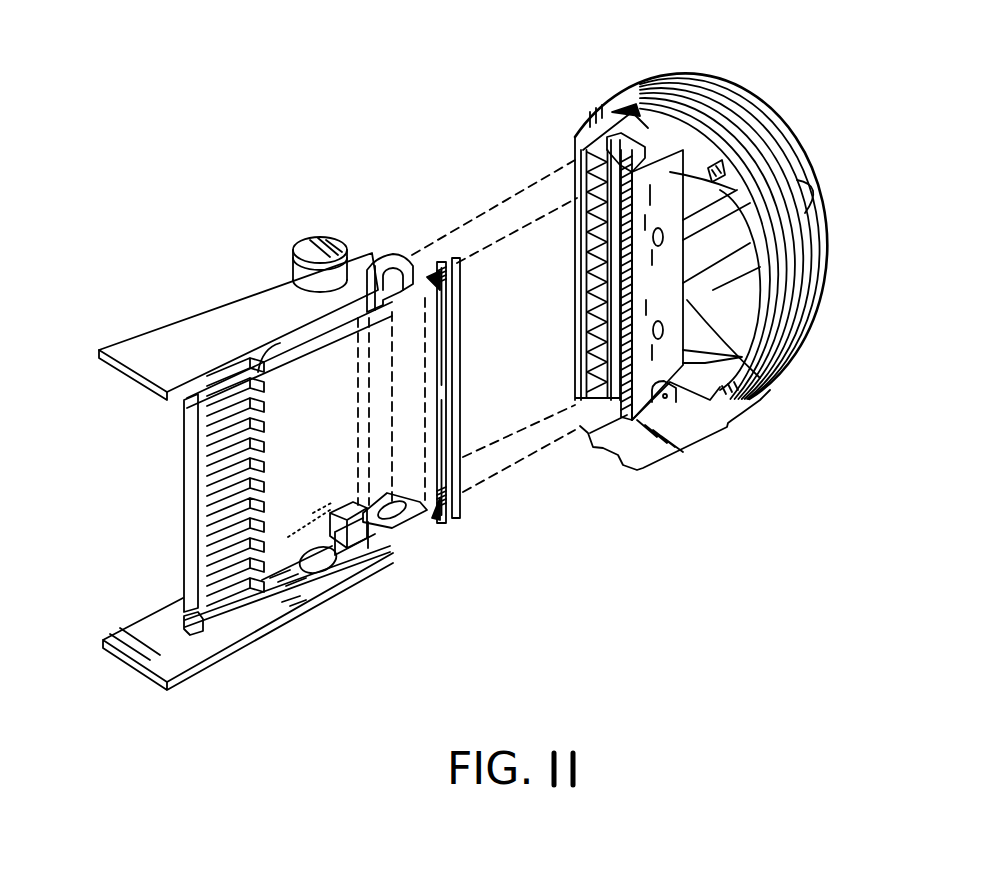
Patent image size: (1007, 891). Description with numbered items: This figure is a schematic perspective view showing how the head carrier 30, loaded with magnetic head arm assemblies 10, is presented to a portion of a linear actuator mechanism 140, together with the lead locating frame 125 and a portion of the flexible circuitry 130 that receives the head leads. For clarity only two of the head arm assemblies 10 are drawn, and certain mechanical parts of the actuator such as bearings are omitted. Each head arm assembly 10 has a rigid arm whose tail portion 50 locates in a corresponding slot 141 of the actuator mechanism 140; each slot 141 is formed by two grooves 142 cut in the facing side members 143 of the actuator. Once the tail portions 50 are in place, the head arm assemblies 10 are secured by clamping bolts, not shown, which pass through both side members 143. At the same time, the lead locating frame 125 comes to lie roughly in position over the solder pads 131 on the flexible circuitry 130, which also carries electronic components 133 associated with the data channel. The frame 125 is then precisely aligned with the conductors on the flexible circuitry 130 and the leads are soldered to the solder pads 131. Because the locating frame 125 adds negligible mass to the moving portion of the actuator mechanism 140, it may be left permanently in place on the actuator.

The magnetic head arm assembly 10 is at (316, 352).
The head carrier 30 is at (206, 288).
The tail portion 50 is at (399, 256).
The lead locating frame 125 is at (470, 515).
The flexible circuitry 130 is at (742, 196).
The solder pads 131 is at (625, 447).
The electronic components 133 is at (662, 338).
The linear actuator mechanism 140 is at (681, 66).
The slot 141 is at (595, 265).
The grooves 142 is at (577, 158).
The side members 143 is at (583, 137).